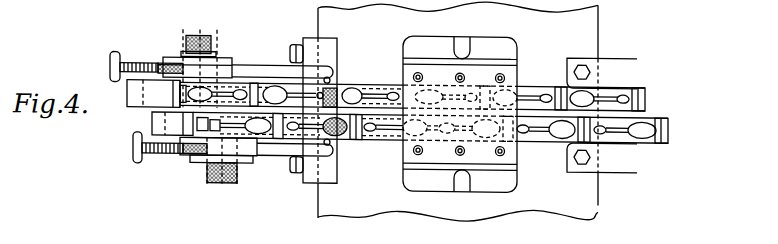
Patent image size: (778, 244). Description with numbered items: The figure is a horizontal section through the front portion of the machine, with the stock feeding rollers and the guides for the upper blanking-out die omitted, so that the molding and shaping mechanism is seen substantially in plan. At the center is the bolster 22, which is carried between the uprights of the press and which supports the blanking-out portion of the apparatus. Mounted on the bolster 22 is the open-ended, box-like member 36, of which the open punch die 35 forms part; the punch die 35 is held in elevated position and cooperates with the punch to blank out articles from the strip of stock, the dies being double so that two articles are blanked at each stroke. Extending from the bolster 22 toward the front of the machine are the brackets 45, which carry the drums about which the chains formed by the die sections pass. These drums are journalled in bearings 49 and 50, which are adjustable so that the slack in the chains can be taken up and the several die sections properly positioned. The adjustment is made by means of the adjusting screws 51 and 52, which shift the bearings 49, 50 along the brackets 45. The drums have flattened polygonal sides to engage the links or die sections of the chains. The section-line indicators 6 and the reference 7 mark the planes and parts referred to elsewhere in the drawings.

The section line 6- 6 is at (212, 0).
The link 7 is at (339, 141).
The bolster 22 is at (588, 198).
The open punch die 35 is at (475, 102).
The open-ended, box-like member 36 is at (480, 46).
The brackets 45 is at (274, 69).
The bearings 49 is at (207, 167).
The bearings 50 is at (217, 57).
The adjusting screw 51 is at (110, 63).
The adjusting screw 52 is at (133, 157).